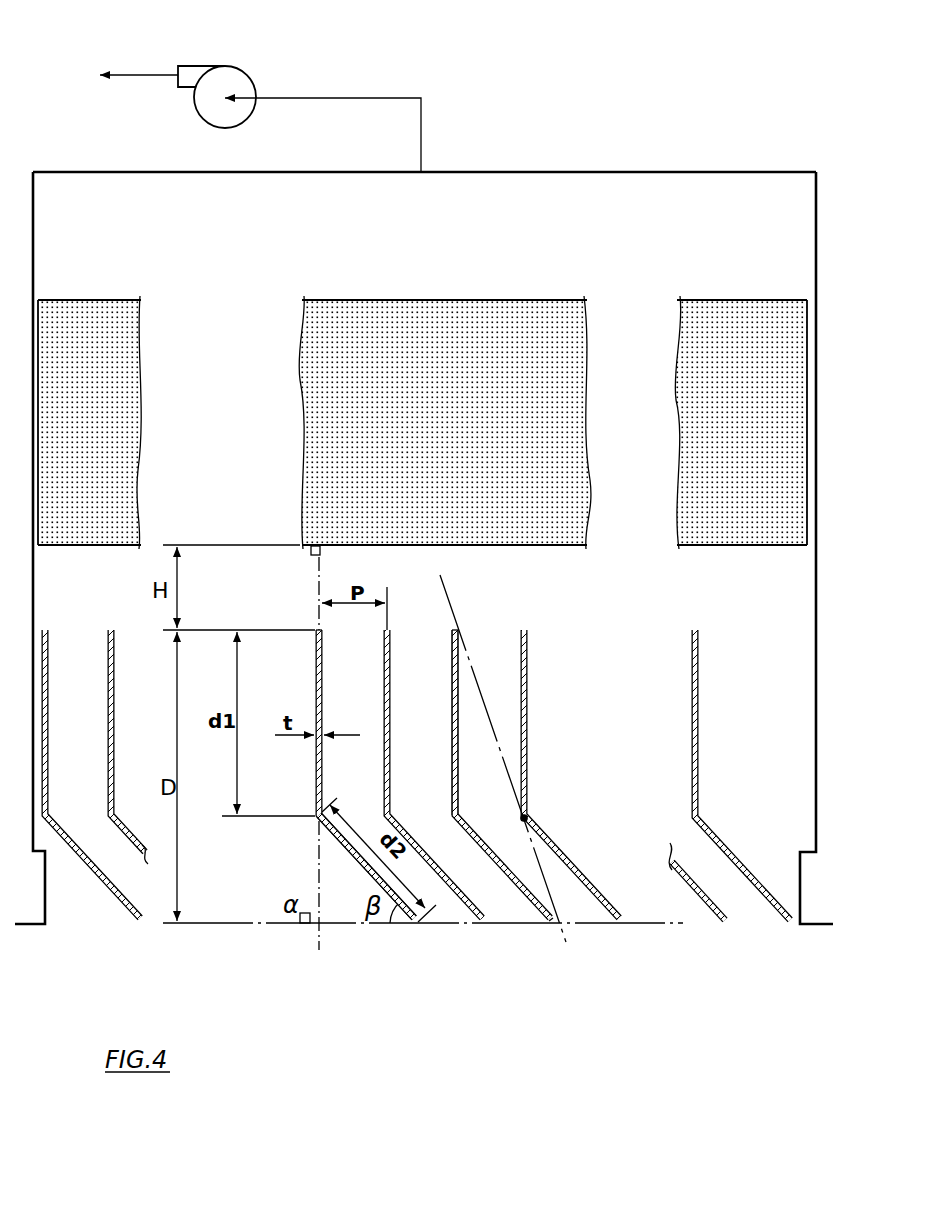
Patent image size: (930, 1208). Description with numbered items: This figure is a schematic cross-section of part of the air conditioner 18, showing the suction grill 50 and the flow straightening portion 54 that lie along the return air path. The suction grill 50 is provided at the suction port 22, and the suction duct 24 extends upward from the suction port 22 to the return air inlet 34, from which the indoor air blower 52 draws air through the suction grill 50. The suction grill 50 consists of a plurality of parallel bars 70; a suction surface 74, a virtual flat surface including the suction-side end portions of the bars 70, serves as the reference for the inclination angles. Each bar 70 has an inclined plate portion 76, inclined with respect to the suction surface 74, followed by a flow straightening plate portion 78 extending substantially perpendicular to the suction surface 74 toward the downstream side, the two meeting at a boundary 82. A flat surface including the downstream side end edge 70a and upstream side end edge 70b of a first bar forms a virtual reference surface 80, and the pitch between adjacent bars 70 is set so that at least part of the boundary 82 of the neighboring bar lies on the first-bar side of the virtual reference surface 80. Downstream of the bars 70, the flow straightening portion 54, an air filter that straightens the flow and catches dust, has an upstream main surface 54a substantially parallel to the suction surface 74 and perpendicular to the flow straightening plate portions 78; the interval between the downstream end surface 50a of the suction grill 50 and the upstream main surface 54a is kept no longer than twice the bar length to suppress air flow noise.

The indoor air blower 52 is at (222, 66).
The return air inlet 34 is at (421, 172).
The suction duct 24 is at (114, 246).
The air conditioner 18 is at (265, 246).
The flow straightening portion 54 is at (428, 292).
The upstream main surface 54a is at (522, 546).
The suction port 22 is at (47, 927).
The suction surface 74 is at (458, 925).
The suction grill 50 is at (417, 773).
The downstream end surface 50a is at (318, 628).
The bar 70 is at (48, 647).
The downstream side end edge 70a is at (457, 628).
The upstream side end edge 70b is at (560, 926).
The flow straightening plate portion 78 is at (314, 700).
The inclined plate portion 76 is at (376, 878).
The virtual reference surface 80 is at (473, 668).
The boundary 82 is at (521, 818).